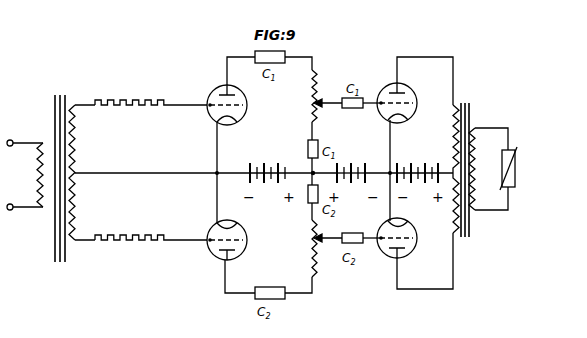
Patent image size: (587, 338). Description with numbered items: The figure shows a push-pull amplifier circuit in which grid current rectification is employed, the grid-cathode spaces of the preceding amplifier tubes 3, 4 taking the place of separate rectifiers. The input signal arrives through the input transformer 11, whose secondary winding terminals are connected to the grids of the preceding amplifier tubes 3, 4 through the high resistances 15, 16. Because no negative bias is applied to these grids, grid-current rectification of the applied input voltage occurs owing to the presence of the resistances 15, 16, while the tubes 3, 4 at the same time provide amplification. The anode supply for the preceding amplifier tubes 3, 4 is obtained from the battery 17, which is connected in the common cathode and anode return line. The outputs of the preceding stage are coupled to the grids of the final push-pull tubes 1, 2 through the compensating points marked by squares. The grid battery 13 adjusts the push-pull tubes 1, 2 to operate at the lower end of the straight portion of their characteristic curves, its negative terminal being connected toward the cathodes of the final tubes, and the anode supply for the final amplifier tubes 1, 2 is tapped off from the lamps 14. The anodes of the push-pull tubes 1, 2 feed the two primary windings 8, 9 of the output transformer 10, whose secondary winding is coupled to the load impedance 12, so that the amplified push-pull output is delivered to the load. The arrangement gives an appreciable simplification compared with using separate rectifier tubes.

The push-pull tube 1 is at (401, 128).
The push-pull tube 2 is at (397, 221).
The preceding amplifier tube 3 is at (231, 129).
The preceding amplifier tube 4 is at (231, 216).
The primary winding 8 is at (448, 139).
The primary winding 9 is at (448, 203).
The output transformer 10 is at (470, 104).
The input transformer 11 is at (57, 263).
The load impedance 12 is at (514, 170).
The grid battery 13 is at (351, 165).
The lamps 14 is at (417, 164).
The high resistance 15 is at (132, 114).
The high resistance 16 is at (132, 250).
The battery 17 is at (267, 165).